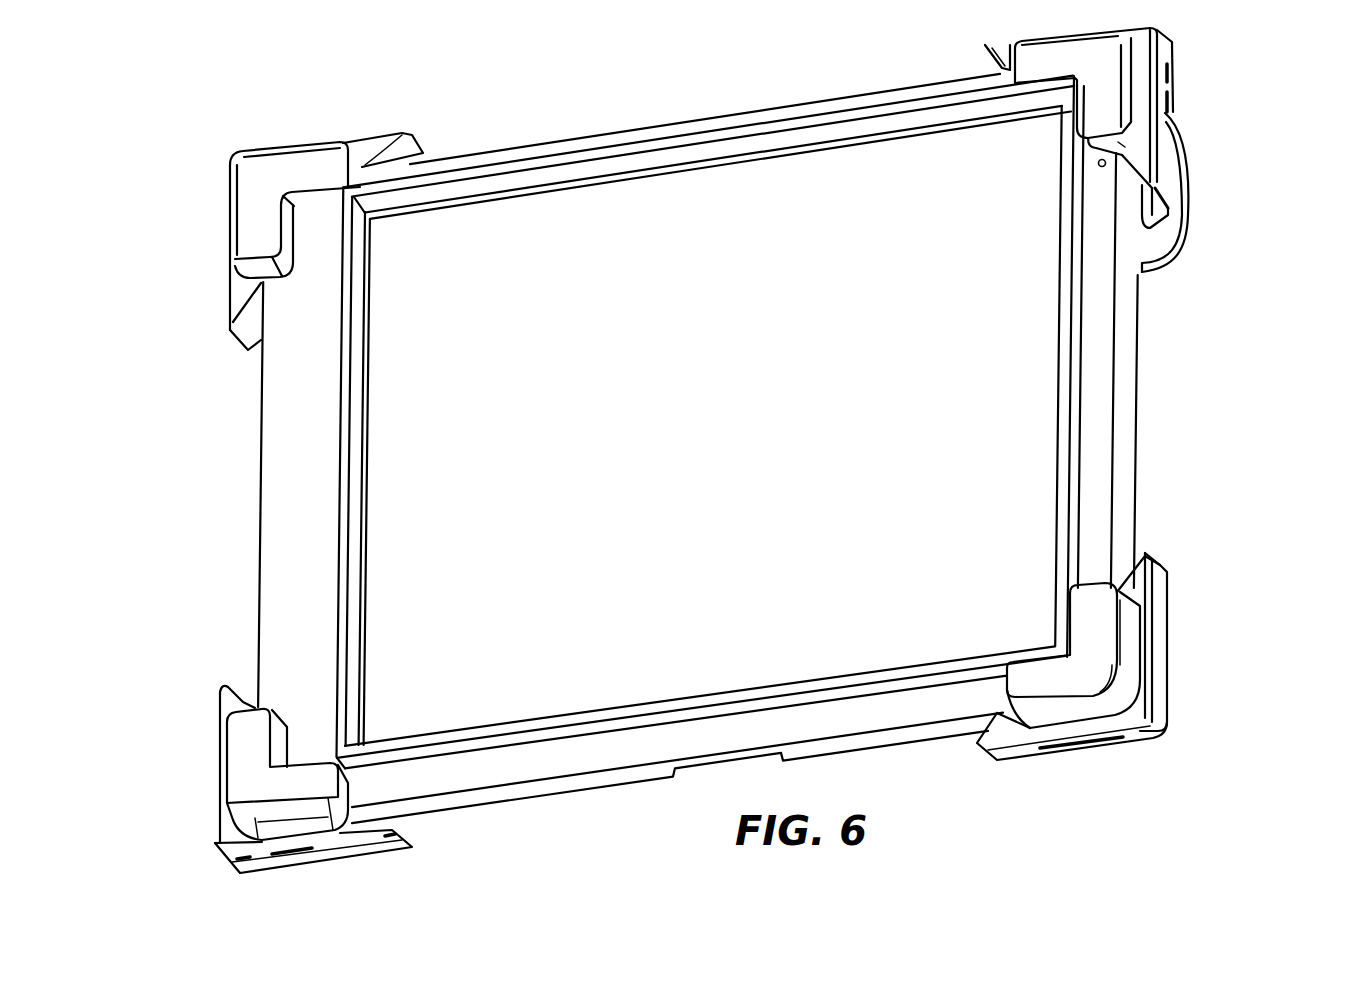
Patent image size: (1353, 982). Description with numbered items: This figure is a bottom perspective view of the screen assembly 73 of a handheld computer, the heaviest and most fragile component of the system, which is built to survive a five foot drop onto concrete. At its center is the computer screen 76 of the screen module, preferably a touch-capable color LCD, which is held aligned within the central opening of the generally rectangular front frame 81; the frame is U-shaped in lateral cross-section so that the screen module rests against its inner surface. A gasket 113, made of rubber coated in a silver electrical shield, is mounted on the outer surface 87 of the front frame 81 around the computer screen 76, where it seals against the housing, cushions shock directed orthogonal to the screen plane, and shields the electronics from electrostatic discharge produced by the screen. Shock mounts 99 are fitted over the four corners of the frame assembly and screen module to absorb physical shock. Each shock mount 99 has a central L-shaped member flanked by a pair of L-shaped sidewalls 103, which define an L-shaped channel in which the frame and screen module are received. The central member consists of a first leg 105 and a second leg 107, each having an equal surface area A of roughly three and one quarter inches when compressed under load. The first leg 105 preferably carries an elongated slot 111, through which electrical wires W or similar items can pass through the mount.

The screen assembly 73 is at (750, 455).
The computer screen 76 is at (632, 223).
The front frame 81 is at (1128, 402).
The outer surface 87 is at (295, 478).
The shock mount 99 is at (272, 170).
The sidewall 103 is at (1092, 612).
The first leg 105 is at (1175, 43).
The second leg 107 is at (1158, 594).
The elongated slot 111 is at (1180, 80).
The gasket 113 is at (344, 556).
The surface area A is at (1167, 167).
The electrical wires W is at (1173, 262).